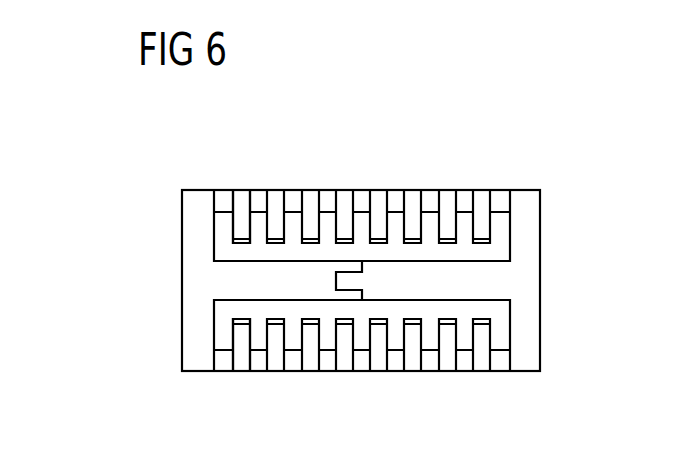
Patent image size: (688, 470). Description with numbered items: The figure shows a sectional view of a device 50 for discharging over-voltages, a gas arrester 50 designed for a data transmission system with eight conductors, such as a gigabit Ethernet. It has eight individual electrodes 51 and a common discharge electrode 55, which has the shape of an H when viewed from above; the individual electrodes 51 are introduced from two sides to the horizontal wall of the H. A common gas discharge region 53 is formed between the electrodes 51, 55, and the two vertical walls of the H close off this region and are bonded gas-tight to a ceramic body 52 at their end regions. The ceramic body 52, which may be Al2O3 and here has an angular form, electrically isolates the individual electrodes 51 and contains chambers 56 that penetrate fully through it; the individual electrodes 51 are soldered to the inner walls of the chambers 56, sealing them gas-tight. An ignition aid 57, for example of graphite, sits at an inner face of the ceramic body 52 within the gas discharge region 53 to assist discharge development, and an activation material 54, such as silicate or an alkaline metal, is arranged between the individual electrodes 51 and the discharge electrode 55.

The device for discharging over-voltages 50 is at (537, 117).
The individual electrodes 51 is at (487, 200).
The ceramic body 52 is at (500, 222).
The common gas discharge region 53 is at (361, 222).
The activation material 54 is at (482, 314).
The common discharge electrode 55 is at (227, 283).
The chambers 56 is at (235, 190).
The ignition aid 57 is at (327, 362).